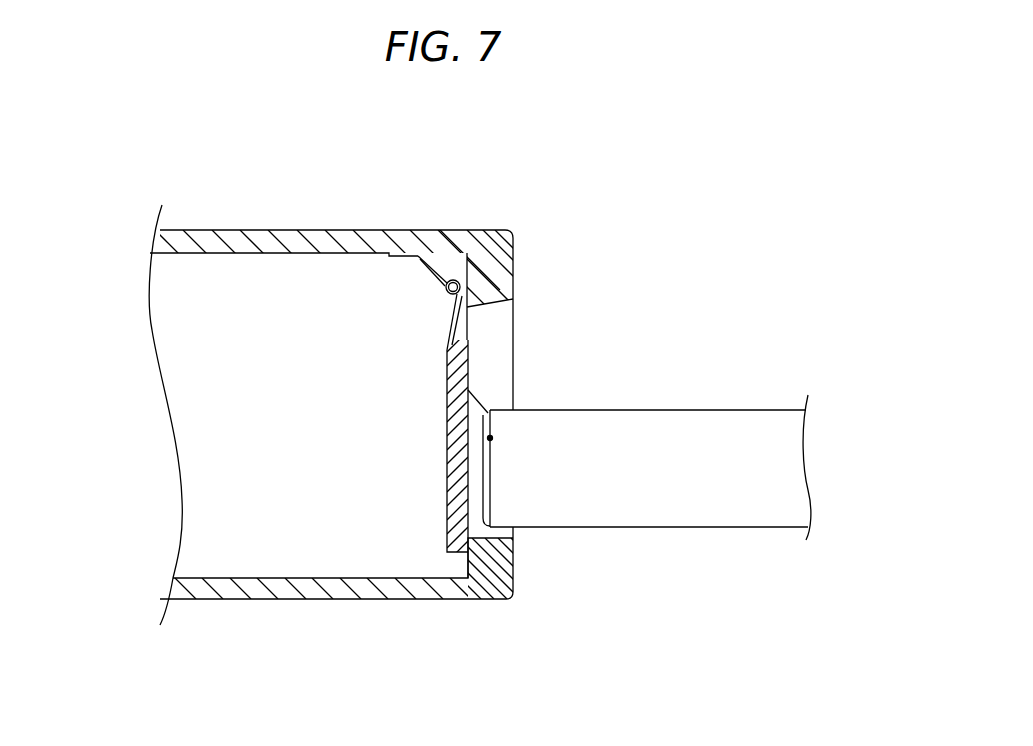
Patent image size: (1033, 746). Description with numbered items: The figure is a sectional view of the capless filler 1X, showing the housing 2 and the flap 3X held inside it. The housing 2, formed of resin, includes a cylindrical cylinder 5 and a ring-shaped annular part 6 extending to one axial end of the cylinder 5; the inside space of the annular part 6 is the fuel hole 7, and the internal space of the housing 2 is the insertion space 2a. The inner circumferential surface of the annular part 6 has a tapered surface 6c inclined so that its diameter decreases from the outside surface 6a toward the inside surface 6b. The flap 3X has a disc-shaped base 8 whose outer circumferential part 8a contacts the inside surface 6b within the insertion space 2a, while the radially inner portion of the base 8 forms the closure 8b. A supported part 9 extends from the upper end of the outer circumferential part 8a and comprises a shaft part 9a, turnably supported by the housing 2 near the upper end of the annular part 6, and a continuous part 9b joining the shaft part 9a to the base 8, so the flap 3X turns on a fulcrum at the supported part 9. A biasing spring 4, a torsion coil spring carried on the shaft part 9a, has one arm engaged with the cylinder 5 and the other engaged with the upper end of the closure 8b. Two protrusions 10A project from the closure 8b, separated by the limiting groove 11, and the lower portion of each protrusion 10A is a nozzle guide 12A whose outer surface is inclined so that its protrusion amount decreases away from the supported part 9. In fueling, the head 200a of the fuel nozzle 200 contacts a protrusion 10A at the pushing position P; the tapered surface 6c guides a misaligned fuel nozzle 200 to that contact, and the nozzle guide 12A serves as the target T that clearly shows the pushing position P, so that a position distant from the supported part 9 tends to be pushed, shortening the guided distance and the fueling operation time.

The capless filler 1X is at (120, 182).
The housing 2 is at (197, 232).
The insertion space 2a is at (198, 318).
The flap 3X is at (446, 488).
The biasing spring 4 is at (447, 296).
The cylinder 5 is at (253, 600).
The annular part 6 is at (497, 276).
The outside surface 6a is at (513, 283).
The inside surface 6b is at (463, 560).
The tapered surface 6c is at (507, 558).
The fuel hole 7 is at (496, 541).
The base 8 is at (446, 452).
The outer circumferential part 8a is at (447, 545).
The closure 8b is at (446, 424).
The supported part 9 is at (452, 278).
The shaft part 9a is at (447, 285).
The continuous part 9b is at (465, 295).
The protrusion 10A is at (490, 462).
The limiting groove 11 is at (490, 473).
The nozzle guide 12A is at (490, 487).
The fuel nozzle 200 is at (717, 527).
The head 200a is at (489, 413).
The pushing position P is at (490, 438).
The target T is at (490, 503).